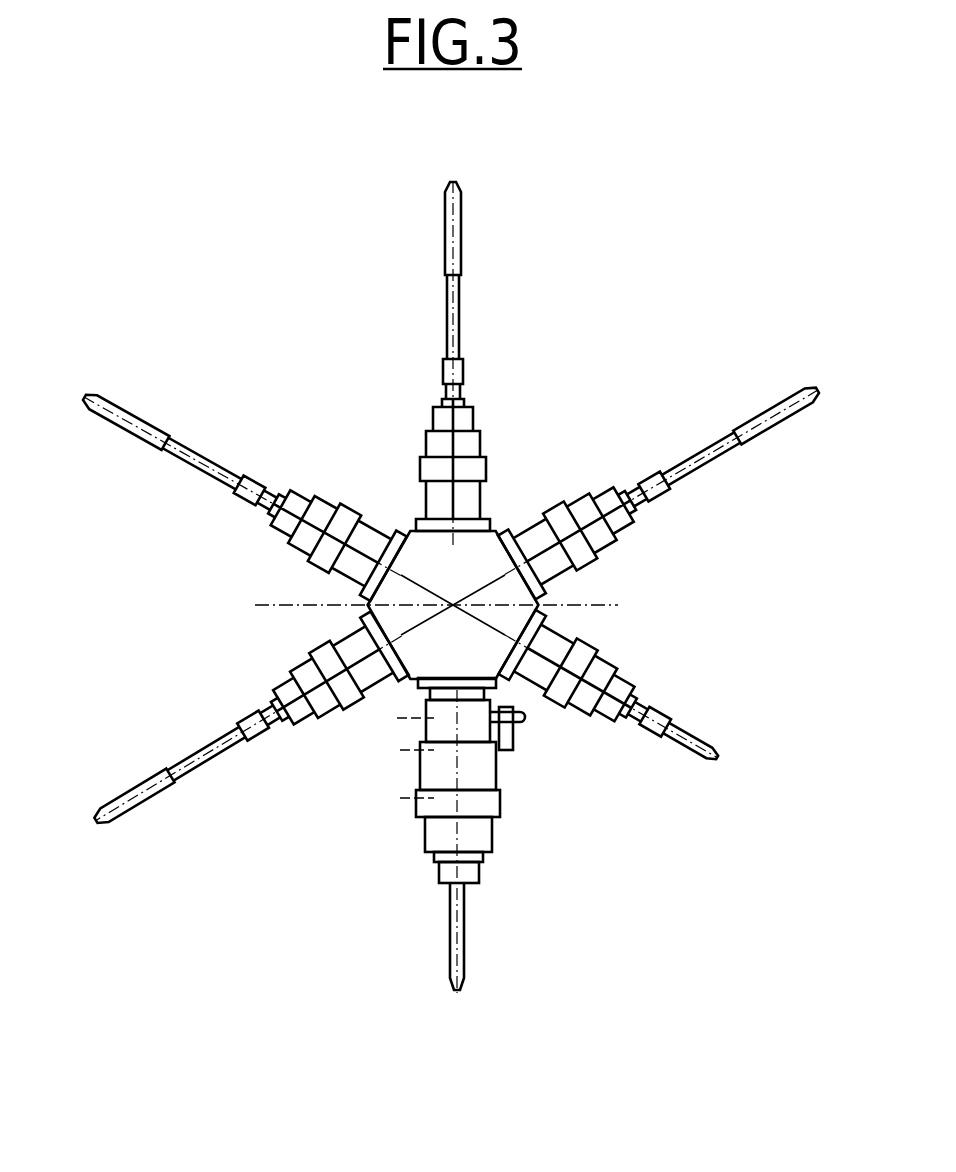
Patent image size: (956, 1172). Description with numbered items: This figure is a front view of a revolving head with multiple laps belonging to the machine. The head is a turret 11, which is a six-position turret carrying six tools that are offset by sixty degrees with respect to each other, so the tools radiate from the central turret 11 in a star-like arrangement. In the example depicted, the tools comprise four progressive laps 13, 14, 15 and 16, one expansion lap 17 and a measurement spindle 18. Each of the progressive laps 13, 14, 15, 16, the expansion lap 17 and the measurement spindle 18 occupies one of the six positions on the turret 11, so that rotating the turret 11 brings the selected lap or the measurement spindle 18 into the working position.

The turret 11 is at (372, 752).
The progressive lap 13 is at (177, 763).
The progressive lap 14 is at (237, 473).
The progressive lap 15 is at (460, 307).
The progressive lap 16 is at (703, 447).
The expansion lap 17 is at (475, 835).
The measurement spindle 18 is at (653, 702).